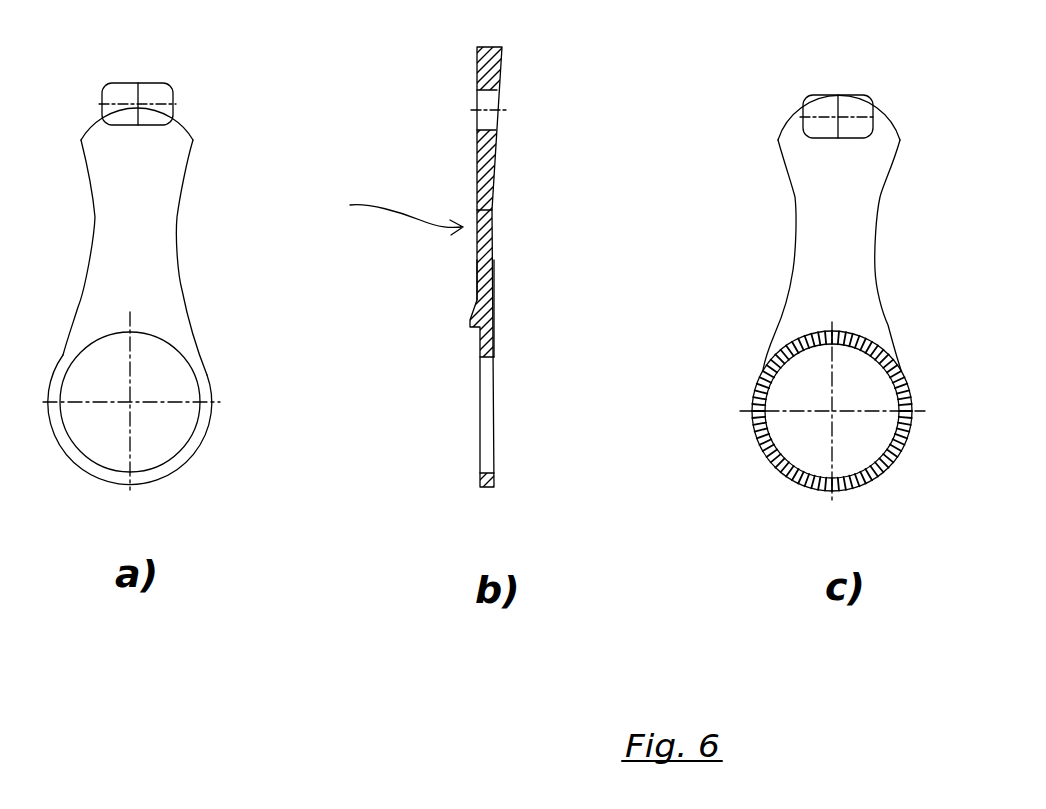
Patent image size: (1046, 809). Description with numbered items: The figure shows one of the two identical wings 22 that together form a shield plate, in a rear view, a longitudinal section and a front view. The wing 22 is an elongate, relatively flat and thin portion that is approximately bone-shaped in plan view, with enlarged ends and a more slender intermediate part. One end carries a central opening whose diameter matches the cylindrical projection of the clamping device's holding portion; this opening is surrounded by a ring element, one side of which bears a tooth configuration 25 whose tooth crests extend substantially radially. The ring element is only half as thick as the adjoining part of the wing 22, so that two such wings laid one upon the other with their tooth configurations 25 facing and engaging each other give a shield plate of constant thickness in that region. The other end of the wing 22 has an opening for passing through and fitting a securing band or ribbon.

The wing 22 is at (185, 276).
The tooth configuration 25 is at (775, 470).